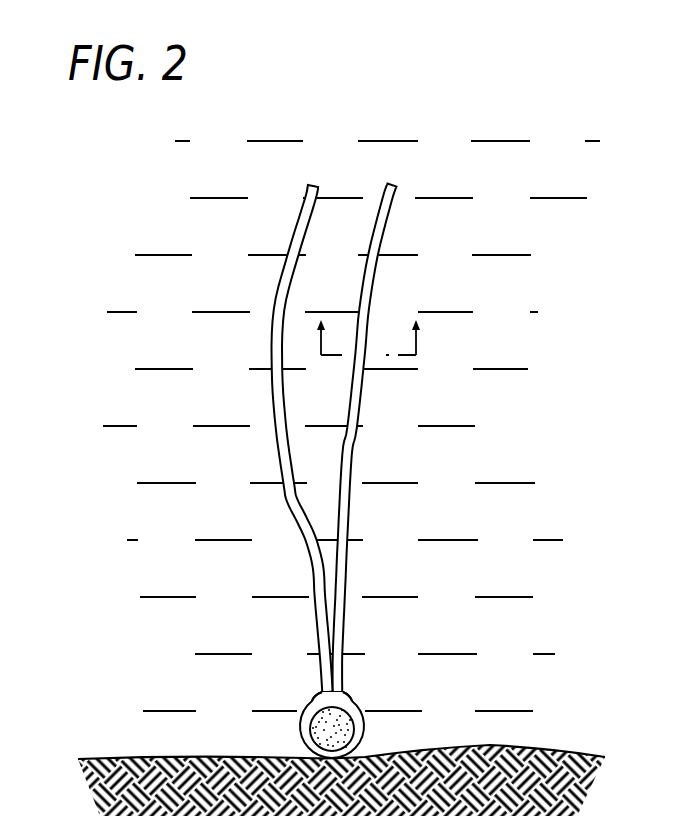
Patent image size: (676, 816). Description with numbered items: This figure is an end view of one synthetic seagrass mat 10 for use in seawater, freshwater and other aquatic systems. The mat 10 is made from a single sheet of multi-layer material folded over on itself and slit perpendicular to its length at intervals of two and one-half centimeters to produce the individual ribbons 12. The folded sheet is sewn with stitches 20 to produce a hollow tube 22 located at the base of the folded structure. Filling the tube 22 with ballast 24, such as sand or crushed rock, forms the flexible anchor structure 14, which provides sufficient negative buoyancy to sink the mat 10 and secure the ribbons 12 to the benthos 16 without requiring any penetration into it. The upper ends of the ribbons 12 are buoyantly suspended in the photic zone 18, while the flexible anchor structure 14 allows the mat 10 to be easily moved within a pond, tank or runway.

The synthetic seagrass mat 10 is at (377, 456).
The ribbons 12 is at (303, 227).
The flexible anchor structure 14 is at (346, 695).
The benthos 16 is at (153, 757).
The photic zone 18 is at (183, 300).
The stitches 20 is at (347, 693).
The hollow tube 22 is at (366, 727).
The ballast 24 is at (338, 727).